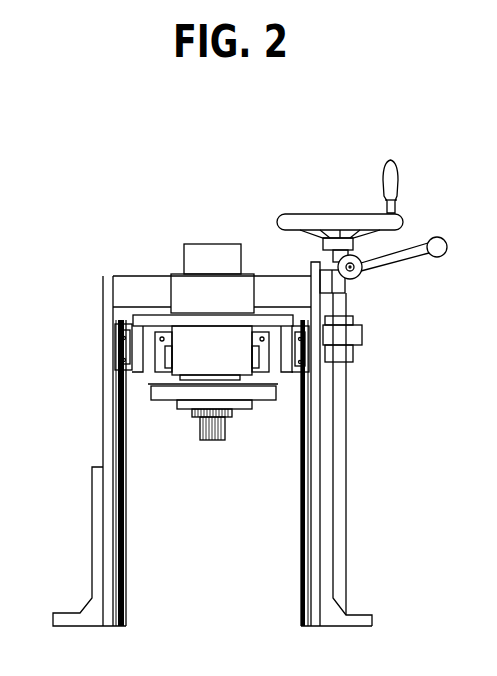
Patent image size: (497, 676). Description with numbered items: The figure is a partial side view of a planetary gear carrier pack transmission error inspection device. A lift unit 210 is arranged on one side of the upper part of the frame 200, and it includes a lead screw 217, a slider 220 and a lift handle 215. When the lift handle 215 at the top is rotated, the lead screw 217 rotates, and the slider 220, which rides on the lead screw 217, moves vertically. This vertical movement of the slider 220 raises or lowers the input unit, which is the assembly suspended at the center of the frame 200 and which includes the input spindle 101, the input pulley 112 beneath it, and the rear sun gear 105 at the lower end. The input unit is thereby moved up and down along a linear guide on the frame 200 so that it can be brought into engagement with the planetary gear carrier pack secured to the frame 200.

The input spindle 101 is at (171, 282).
The rear sun gear 105 is at (220, 424).
The input pulley 112 is at (167, 392).
The frame 200 is at (111, 420).
The lift unit 210 is at (362, 393).
The lift handle 215 is at (330, 220).
The lead screw 217 is at (340, 415).
The slider 220 is at (345, 353).